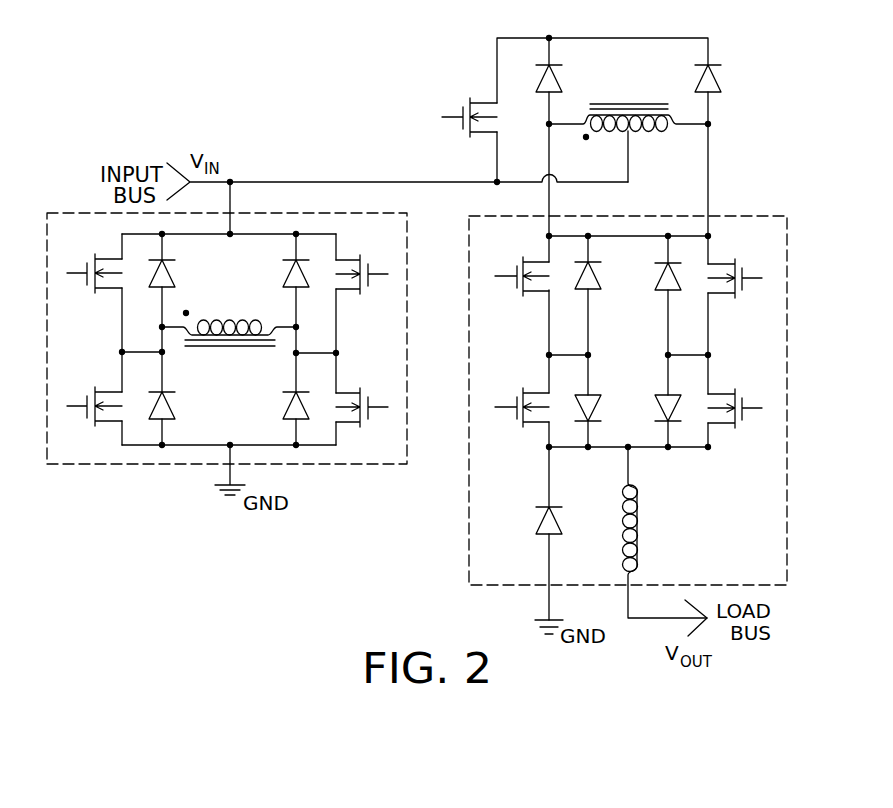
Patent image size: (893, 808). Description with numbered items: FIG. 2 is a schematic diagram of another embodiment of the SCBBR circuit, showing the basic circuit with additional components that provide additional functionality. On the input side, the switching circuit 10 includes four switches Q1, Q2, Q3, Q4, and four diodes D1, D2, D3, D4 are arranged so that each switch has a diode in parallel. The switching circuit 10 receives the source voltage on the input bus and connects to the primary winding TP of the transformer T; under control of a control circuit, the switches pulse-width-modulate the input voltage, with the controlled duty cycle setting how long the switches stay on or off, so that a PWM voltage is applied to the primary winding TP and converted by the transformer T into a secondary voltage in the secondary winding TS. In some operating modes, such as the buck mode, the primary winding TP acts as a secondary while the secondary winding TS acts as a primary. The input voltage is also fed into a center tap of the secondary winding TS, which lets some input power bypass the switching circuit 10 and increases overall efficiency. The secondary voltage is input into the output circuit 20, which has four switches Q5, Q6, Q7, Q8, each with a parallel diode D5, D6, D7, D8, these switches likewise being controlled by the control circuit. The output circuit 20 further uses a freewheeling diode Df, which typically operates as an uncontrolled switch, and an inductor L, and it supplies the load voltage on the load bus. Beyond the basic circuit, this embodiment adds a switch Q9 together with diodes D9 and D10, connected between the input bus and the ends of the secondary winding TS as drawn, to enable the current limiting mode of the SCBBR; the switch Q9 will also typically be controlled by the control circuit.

The switching circuit 10 is at (407, 252).
The output circuit 20 is at (468, 545).
The switch Q1 is at (88, 260).
The switch Q2 is at (368, 264).
The switch Q3 is at (88, 393).
The switch Q4 is at (368, 397).
The switch Q5 is at (513, 265).
The switch Q6 is at (741, 266).
The switch Q7 is at (513, 396).
The switch Q8 is at (741, 399).
The switch Q9 is at (460, 105).
The diode D1 is at (177, 275).
The diode D2 is at (282, 277).
The diode D3 is at (177, 411).
The diode D4 is at (282, 411).
The diode D5 is at (603, 286).
The diode D6 is at (653, 273).
The diode D7 is at (603, 416).
The diode D8 is at (653, 394).
The diode D9 is at (532, 76).
The diode D10 is at (731, 83).
The freewheeling diode Df is at (529, 520).
The transformer T is at (435, 223).
The primary winding TP is at (229, 311).
The secondary winding TS is at (628, 148).
The inductor L is at (665, 532).